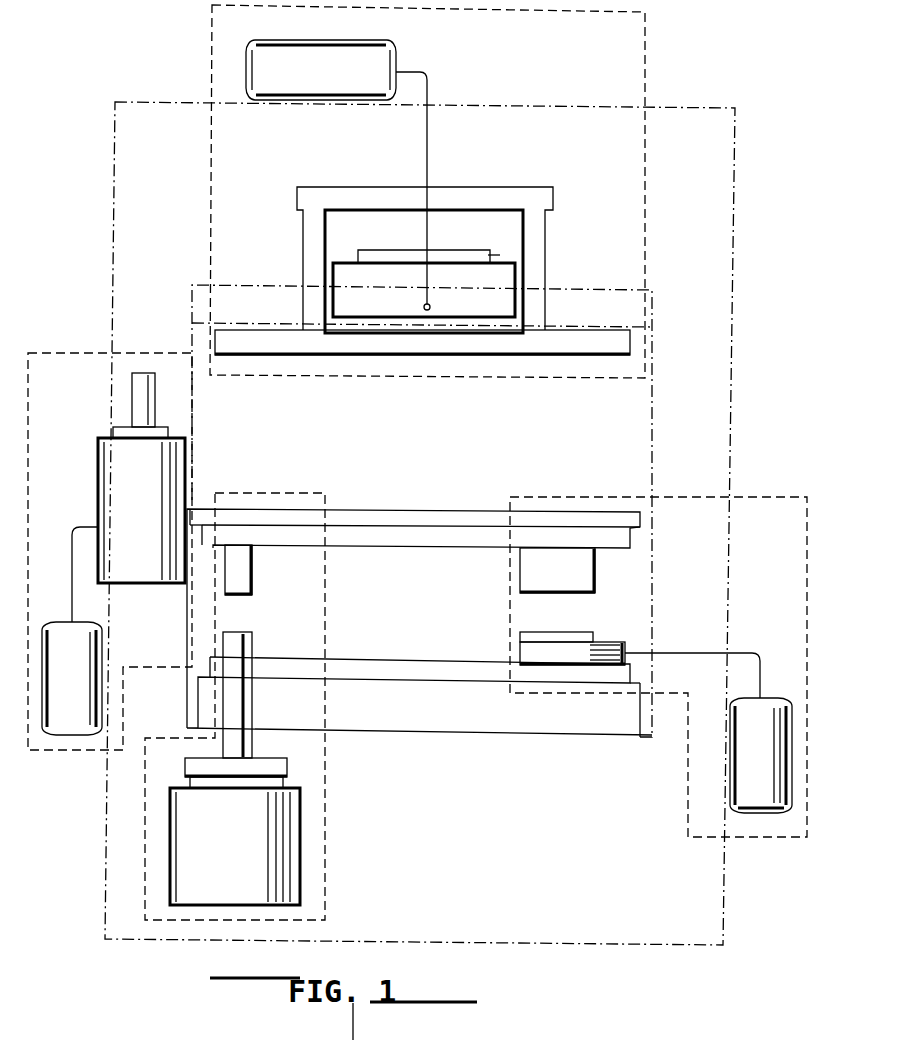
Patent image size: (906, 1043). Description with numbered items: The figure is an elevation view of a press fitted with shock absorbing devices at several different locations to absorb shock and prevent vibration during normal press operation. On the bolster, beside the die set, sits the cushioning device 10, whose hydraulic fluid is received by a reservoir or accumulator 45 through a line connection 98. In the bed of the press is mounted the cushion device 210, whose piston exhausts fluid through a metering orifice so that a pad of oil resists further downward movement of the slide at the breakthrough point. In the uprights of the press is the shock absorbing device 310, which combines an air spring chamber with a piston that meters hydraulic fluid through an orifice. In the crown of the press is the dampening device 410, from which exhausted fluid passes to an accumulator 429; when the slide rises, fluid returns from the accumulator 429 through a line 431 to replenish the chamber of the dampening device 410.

The accumulator 429 is at (396, 56).
The line 431 is at (428, 157).
The dampening device 410 is at (523, 273).
The shock absorbing device 310 is at (187, 467).
The cushion device 210 is at (302, 857).
The cushioning device 10 is at (600, 637).
The line connection 98 is at (684, 651).
The reservoir or accumulator 45 is at (772, 697).